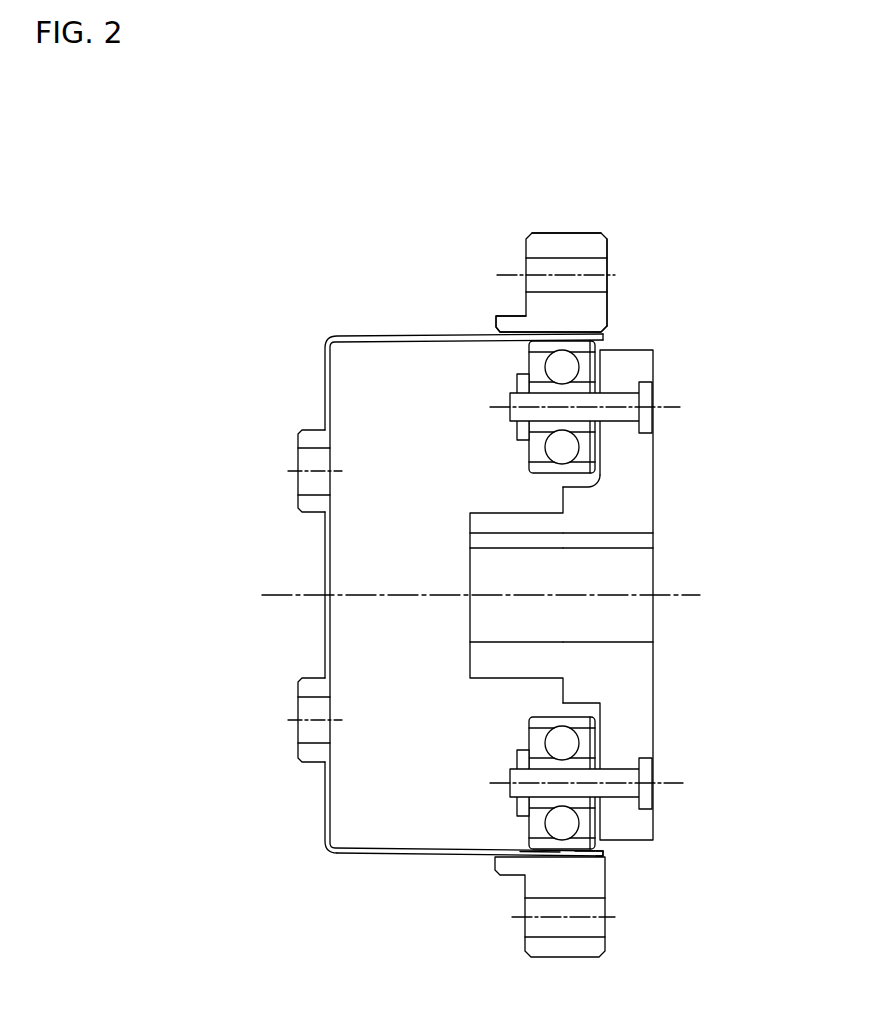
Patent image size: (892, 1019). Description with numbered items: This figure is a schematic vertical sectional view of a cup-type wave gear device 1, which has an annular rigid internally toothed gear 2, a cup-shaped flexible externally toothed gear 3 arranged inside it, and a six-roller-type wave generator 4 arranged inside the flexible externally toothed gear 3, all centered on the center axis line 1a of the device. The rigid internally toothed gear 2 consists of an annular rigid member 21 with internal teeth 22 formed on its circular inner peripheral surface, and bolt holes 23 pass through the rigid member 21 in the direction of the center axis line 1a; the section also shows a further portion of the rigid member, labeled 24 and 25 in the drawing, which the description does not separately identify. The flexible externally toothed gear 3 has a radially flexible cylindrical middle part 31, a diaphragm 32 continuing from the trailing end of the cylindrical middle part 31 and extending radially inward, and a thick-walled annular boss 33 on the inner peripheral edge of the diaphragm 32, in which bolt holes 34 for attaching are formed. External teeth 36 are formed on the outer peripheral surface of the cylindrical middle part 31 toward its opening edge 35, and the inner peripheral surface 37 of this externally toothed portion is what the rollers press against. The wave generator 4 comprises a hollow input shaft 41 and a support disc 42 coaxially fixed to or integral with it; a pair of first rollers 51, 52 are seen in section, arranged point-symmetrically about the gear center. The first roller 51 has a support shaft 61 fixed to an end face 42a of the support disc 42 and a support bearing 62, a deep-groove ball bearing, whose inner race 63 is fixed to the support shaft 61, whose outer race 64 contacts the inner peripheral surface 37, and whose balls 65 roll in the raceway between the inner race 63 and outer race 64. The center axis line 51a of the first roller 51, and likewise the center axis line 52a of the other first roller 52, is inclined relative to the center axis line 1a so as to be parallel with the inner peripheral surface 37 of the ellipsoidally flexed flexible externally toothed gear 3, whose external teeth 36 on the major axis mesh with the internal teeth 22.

The wave gear device 1 is at (690, 181).
The center axis line 1a is at (290, 596).
The rigid internally toothed gear 2 is at (601, 218).
The rigid member 21 is at (601, 245).
The internal teeth 22 is at (607, 347).
The bolt holes 23 is at (601, 268).
The roller 24 is at (590, 925).
The roller portion 25 is at (569, 263).
The flexible externally toothed gear 3 is at (362, 309).
The cylindrical middle part 31 is at (390, 854).
The diaphragm 32 is at (322, 792).
The boss 33 is at (310, 753).
The bolt holes 34 is at (310, 458).
The opening edge 35 is at (604, 849).
The external teeth 36 is at (540, 853).
The inner peripheral surface 37 is at (582, 847).
The wave generator 4 is at (682, 365).
The hollow input shaft 41 is at (490, 668).
The support disc 42 is at (640, 690).
The end face 42a is at (590, 478).
The first roller 51 is at (504, 352).
The center axis line 51a is at (676, 405).
The first roller 52 is at (496, 831).
The center axis line 52a is at (673, 780).
The support shaft 61 is at (580, 401).
The support bearing 62 is at (490, 424).
The inner race 63 is at (543, 428).
The outer race 64 is at (538, 472).
The balls 65 is at (553, 454).